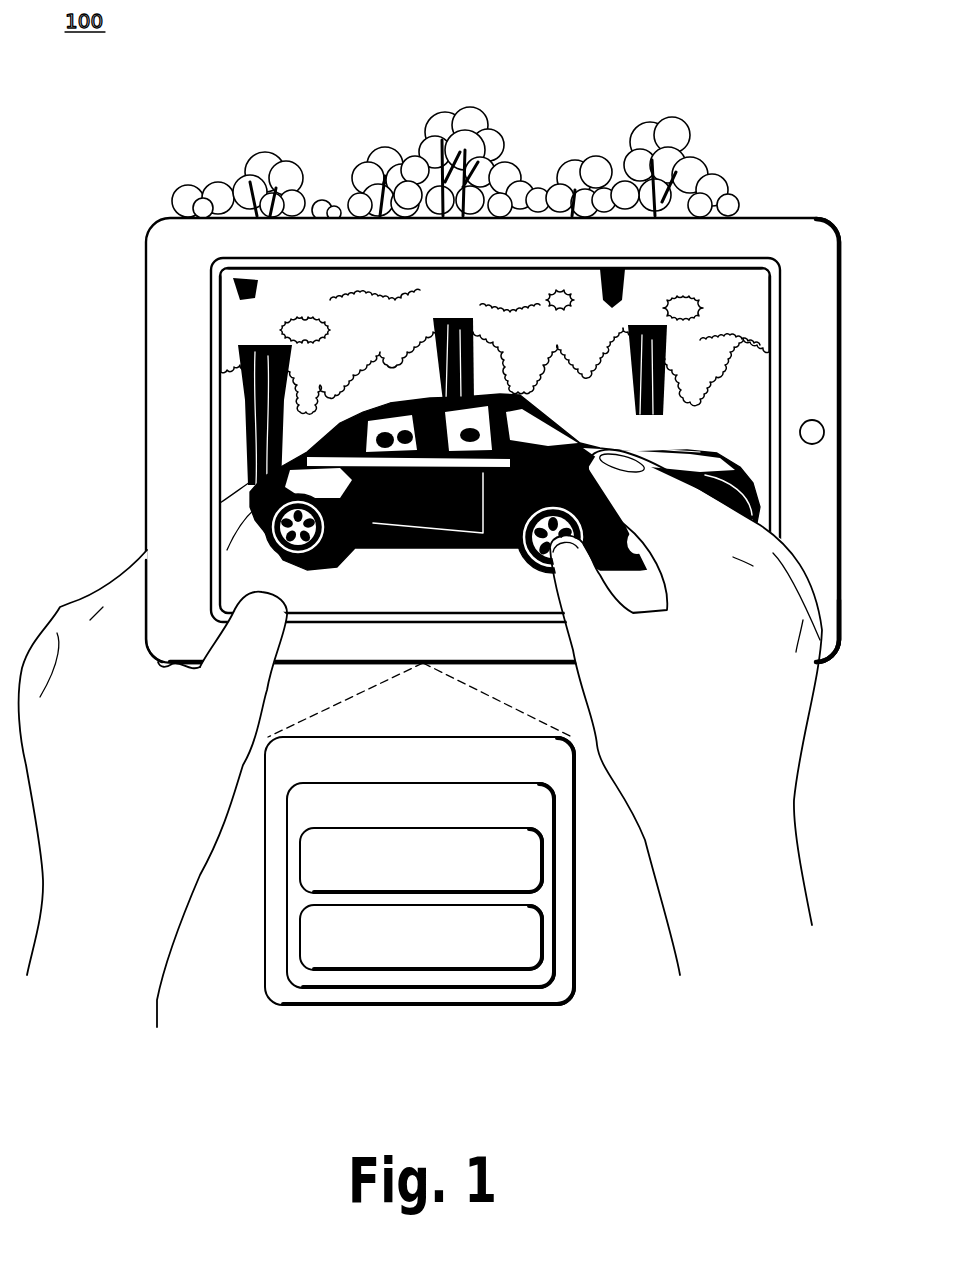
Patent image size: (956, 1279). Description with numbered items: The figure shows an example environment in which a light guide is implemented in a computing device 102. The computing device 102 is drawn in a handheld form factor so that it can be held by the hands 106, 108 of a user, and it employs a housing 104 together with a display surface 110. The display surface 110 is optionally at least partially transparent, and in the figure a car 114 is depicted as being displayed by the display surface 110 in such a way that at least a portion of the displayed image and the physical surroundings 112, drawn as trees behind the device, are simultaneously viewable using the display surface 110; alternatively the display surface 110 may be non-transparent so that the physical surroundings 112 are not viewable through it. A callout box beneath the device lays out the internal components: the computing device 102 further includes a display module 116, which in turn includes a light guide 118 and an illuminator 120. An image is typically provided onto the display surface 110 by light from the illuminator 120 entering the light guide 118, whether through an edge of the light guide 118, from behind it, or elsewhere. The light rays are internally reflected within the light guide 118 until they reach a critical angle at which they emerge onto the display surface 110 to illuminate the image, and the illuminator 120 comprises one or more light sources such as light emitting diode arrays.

The computing device 102 is at (543, 769).
The housing 104 is at (146, 437).
The hand 106 is at (133, 772).
The hand 108 is at (729, 714).
The display surface 110 is at (424, 598).
The physical surroundings 112 is at (722, 148).
The car 114 is at (688, 452).
The display module 116 is at (526, 817).
The light guide 118 is at (504, 871).
The illuminator 120 is at (504, 949).